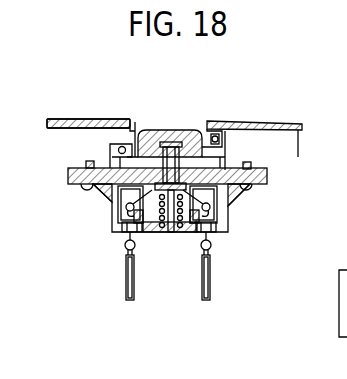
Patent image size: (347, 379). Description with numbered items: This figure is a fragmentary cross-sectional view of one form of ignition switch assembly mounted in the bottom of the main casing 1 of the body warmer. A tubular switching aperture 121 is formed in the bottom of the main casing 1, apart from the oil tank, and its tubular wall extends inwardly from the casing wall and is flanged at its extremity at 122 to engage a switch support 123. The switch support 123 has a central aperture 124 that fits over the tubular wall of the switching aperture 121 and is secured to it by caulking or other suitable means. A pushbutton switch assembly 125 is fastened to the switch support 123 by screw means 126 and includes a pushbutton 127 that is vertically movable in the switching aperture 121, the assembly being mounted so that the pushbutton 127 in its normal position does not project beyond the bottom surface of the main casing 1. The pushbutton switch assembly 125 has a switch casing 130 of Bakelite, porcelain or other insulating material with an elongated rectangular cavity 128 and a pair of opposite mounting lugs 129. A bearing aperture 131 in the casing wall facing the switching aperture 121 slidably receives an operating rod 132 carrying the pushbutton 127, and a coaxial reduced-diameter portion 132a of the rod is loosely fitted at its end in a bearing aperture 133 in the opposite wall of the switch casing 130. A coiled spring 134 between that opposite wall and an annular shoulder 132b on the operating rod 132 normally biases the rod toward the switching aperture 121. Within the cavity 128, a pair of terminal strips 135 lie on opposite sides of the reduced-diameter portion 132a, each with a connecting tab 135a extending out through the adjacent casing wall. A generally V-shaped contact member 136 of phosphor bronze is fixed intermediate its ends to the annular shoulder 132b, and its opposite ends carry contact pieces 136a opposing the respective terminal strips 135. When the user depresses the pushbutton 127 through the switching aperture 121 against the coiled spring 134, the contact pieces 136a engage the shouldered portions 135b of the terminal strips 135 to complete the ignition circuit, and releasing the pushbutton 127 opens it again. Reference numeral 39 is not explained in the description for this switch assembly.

The main casing 1 is at (48, 119).
The terminal pin 39 is at (126, 298).
The switching aperture 121 is at (204, 124).
The flange 122 is at (128, 127).
The switch support 123 is at (265, 150).
The central aperture 124 is at (228, 124).
The pushbutton switch assembly 125 is at (112, 222).
The screw means 126 is at (86, 191).
The pushbutton 127 is at (186, 140).
The elongated rectangular cavity 128 is at (188, 235).
The mounting lugs 129 is at (68, 175).
The switch casing 130 is at (232, 215).
The bearing aperture 131 is at (146, 135).
The operating rod 132 is at (170, 142).
The reduced-diameter portion 132a is at (170, 233).
The annular shoulder 132b is at (262, 152).
The bearing aperture 133 is at (163, 227).
The coiled spring 134 is at (141, 262).
The terminal strips 135 is at (125, 212).
The connecting tab 135a is at (127, 260).
The shouldered portions 135b is at (120, 232).
The contact member 136 is at (126, 142).
The contact pieces 136a is at (133, 186).